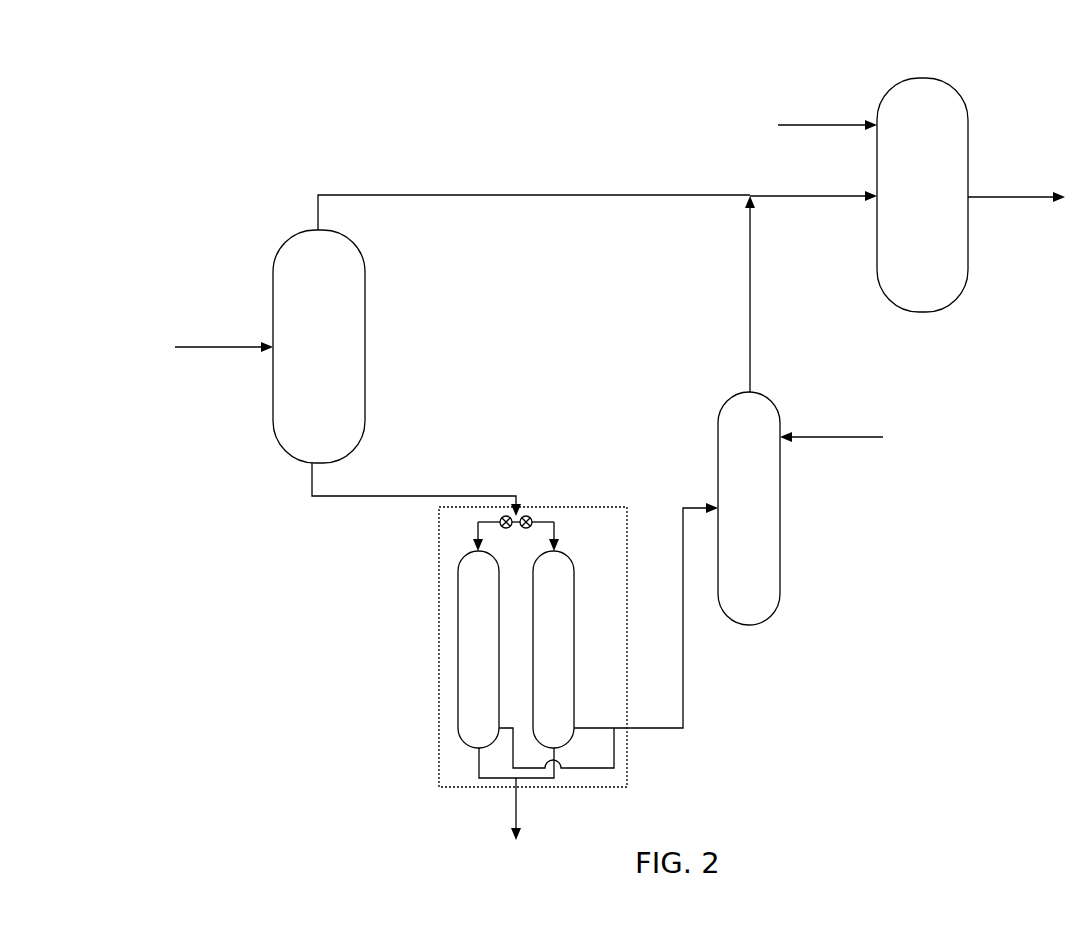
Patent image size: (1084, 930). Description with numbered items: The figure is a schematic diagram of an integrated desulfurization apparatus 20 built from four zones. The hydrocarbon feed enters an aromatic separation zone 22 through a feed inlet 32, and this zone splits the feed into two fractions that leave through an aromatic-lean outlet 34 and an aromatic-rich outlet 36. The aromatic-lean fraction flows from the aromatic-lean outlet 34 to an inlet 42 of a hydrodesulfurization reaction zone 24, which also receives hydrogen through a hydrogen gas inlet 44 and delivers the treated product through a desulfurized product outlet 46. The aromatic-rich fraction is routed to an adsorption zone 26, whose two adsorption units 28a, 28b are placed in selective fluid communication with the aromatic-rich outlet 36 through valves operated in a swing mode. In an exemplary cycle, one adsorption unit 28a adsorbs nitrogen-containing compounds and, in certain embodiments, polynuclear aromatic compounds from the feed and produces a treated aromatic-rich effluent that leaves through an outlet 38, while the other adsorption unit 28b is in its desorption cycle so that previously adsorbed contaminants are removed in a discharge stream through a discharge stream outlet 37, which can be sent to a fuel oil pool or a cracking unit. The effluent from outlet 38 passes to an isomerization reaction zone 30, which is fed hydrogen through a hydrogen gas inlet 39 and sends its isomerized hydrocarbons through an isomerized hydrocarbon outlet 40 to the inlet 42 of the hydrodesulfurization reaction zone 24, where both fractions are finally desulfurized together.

The integrated desulfurization apparatus 20 is at (190, 95).
The aromatic separation zone 22 is at (329, 354).
The hydrodesulfurization reaction zone 24 is at (930, 204).
The adsorption zone 26 is at (437, 636).
The adsorption unit 28a is at (495, 667).
The adsorption unit 28b is at (570, 667).
The isomerization reaction zone 30 is at (761, 521).
The feed inlet 32 is at (213, 345).
The aromatic-lean outlet 34 is at (487, 194).
The aromatic-rich outlet 36 is at (405, 494).
The discharge stream outlet 37 is at (512, 815).
The outlet 38 is at (672, 726).
The hydrogen gas inlet 39 is at (871, 439).
The isomerized hydrocarbon outlet 40 is at (745, 290).
The inlet 42 is at (799, 195).
The hydrogen gas inlet 44 is at (810, 123).
The desulfurized product outlet 46 is at (996, 195).